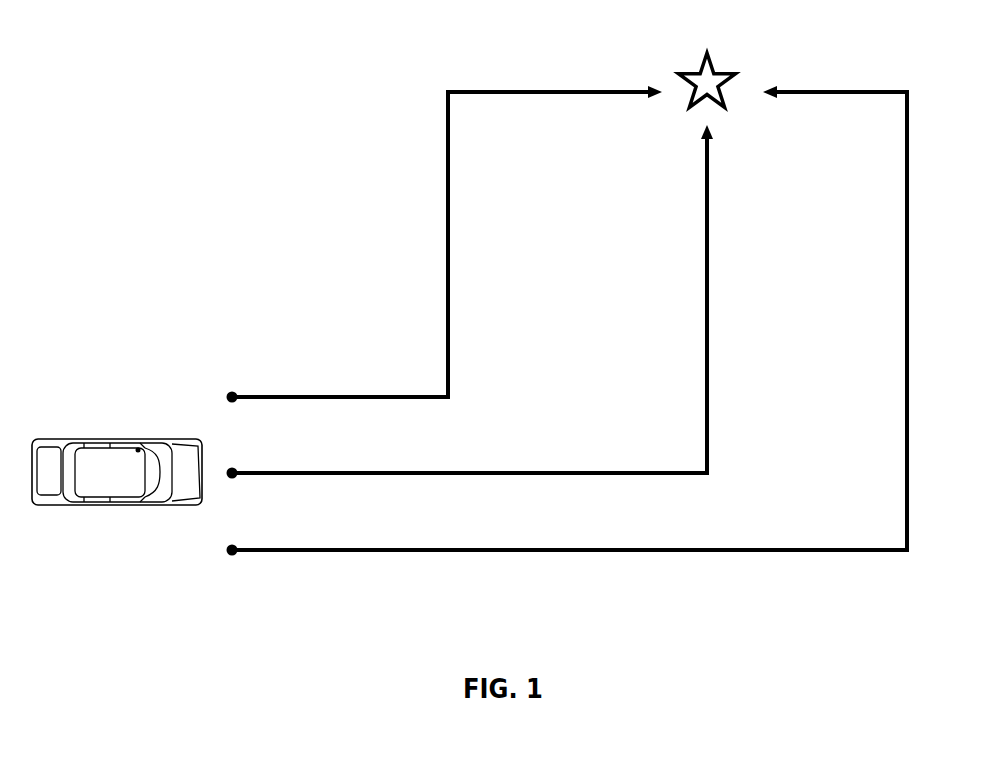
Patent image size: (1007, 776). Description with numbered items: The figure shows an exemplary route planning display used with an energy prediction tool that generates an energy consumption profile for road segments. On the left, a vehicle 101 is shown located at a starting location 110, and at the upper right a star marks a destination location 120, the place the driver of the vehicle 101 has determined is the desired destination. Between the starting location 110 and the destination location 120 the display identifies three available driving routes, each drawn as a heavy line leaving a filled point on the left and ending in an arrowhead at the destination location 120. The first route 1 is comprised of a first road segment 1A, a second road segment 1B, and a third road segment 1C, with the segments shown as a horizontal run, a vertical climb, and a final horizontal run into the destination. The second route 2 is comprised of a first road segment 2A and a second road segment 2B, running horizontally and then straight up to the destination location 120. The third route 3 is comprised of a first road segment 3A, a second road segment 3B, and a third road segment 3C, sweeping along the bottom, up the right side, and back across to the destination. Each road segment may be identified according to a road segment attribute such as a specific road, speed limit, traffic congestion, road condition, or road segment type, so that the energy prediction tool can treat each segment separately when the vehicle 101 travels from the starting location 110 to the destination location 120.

The vehicle 101 is at (137, 447).
The starting location 110 is at (117, 490).
The destination location 120 is at (700, 68).
The first route 1 is at (225, 396).
The second route 2 is at (225, 473).
The third route 3 is at (225, 550).
The first road segment 1A is at (340, 380).
The second road segment 1B is at (430, 245).
The third road segment 1C is at (554, 80).
The first road segment 2A is at (469, 458).
The second road segment 2B is at (693, 300).
The first road segment 3A is at (569, 534).
The second road segment 3B is at (889, 322).
The third road segment 3C is at (836, 80).